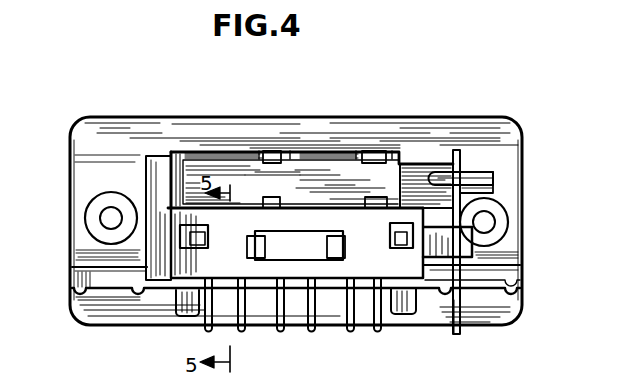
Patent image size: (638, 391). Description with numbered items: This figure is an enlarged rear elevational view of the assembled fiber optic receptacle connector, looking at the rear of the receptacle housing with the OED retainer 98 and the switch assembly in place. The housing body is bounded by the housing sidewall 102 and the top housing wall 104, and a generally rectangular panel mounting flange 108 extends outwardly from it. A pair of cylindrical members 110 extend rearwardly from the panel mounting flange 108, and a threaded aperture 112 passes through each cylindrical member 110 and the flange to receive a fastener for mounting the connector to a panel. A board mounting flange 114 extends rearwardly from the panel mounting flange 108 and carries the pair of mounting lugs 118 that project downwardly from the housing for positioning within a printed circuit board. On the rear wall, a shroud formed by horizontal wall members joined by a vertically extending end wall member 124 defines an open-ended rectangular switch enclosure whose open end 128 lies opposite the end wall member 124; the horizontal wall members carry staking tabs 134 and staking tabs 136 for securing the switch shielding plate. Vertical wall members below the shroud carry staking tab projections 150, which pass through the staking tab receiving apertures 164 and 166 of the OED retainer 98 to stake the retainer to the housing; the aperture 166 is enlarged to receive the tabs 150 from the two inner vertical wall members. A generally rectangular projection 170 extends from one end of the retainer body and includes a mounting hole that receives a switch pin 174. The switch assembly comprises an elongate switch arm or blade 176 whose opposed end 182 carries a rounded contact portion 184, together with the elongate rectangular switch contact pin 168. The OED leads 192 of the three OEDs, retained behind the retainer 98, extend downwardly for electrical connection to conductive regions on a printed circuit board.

The OED retainer 98 is at (198, 262).
The housing sidewall 102 is at (149, 176).
The top housing wall 104 is at (160, 157).
The panel mounting flange 108 is at (82, 137).
The cylindrical member 110 is at (97, 207).
The threaded aperture 112 is at (110, 226).
The board mounting flange 114 is at (92, 276).
The mounting lug 118 is at (186, 316).
The end wall member 124 is at (178, 183).
The open end 128 is at (403, 163).
The staking tab 134 is at (274, 155).
The staking tab 136 is at (365, 202).
The staking tab projection 150 is at (204, 238).
The staking tab receiving aperture 164 is at (188, 232).
The staking tab receiving aperture 166 is at (297, 258).
The switch contact pin 168 is at (422, 258).
The rectangular projection 170 is at (517, 256).
The switch pin 174 is at (506, 198).
The switch arm or blade 176 is at (437, 165).
The opposed end 182 is at (495, 170).
The rounded contact portion 184 is at (485, 181).
The OED leads 192 is at (348, 328).